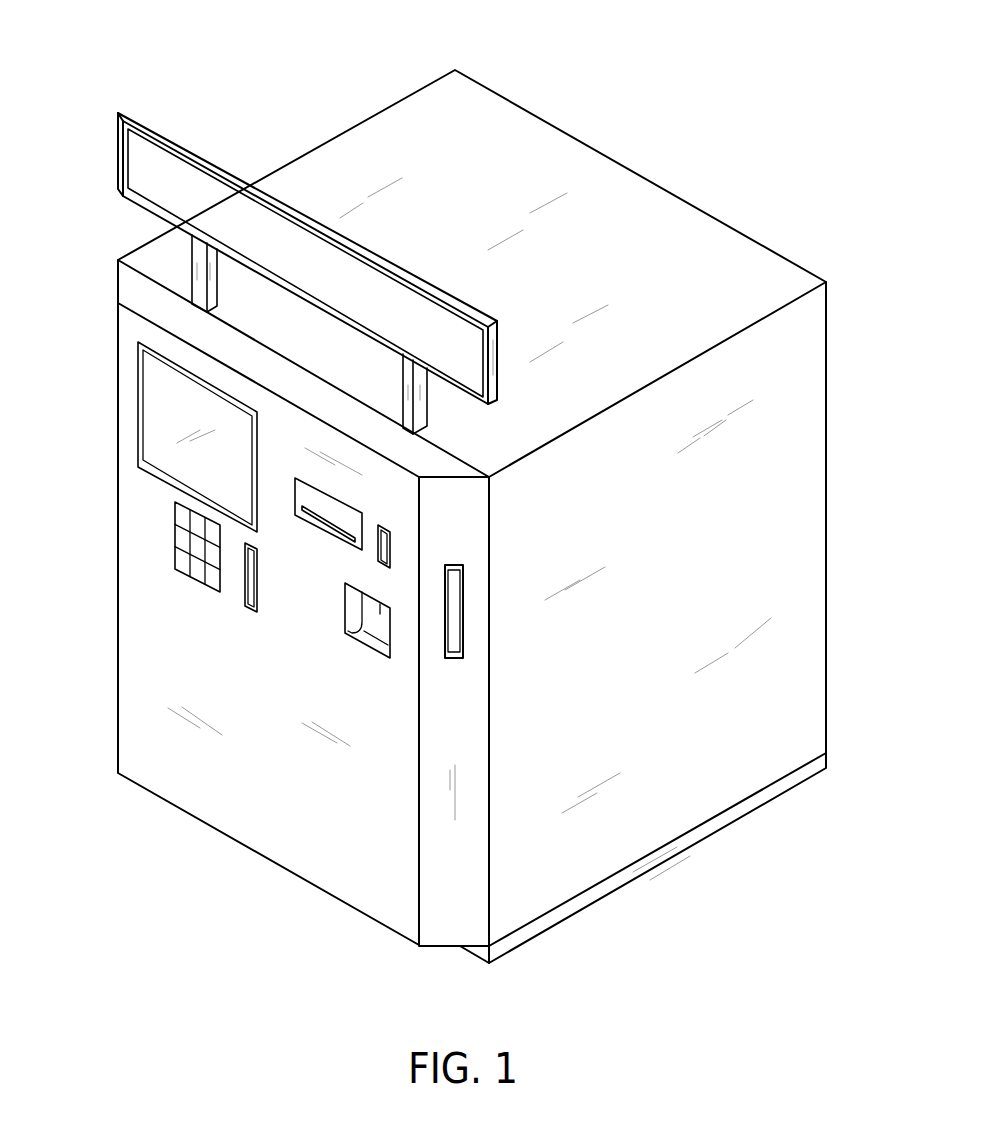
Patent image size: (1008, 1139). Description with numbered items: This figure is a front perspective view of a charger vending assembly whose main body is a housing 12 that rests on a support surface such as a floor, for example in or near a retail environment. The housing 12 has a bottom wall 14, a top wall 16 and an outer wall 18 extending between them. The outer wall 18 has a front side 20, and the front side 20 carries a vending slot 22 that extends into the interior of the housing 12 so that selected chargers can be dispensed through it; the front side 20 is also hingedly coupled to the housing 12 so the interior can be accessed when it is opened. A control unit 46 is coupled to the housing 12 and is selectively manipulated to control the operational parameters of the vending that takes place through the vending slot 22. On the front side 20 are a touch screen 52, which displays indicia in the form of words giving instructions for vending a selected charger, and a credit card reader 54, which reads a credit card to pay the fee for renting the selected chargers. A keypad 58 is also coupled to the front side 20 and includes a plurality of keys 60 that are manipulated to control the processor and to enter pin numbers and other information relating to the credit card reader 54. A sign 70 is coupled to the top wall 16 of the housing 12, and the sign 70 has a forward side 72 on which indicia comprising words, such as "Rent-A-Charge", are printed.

The housing 12 is at (469, 506).
The bottom wall 14 is at (748, 812).
The top wall 16 is at (633, 188).
The outer wall 18 is at (786, 532).
The front side 20 is at (339, 865).
The vending slot 22 is at (455, 662).
The control unit 46 is at (214, 517).
The touch screen 52 is at (162, 403).
The credit card reader 54 is at (330, 525).
The keypad 58 is at (129, 523).
The keys 60 is at (212, 532).
The sign 70 is at (267, 232).
The forward side 72 is at (135, 162).